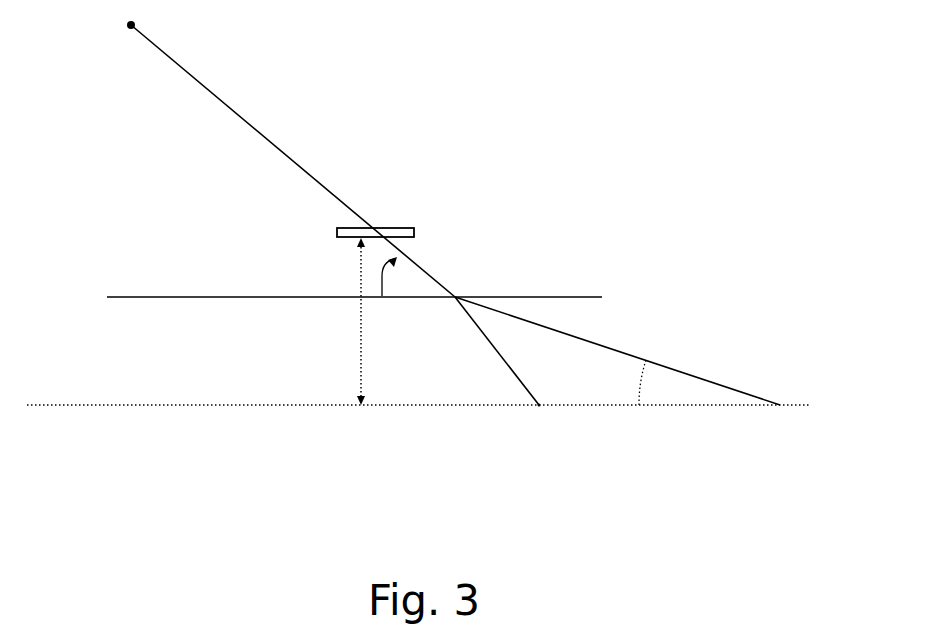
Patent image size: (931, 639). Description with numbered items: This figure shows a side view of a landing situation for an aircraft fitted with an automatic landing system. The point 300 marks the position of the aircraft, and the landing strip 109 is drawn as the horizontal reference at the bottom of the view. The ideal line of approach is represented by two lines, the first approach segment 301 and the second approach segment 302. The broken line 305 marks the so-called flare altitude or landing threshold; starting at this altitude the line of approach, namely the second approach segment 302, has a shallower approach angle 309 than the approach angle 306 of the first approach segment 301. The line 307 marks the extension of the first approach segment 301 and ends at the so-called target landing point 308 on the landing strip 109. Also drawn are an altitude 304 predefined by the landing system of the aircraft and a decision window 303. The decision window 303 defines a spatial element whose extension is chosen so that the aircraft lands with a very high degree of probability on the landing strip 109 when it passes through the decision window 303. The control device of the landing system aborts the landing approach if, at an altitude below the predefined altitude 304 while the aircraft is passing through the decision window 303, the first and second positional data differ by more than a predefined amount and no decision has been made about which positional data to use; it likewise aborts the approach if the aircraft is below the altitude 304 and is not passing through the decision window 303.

The point 300 is at (131, 25).
The first approach segment 301 is at (240, 116).
The second approach segment 302 is at (683, 372).
The decision window 303 is at (416, 232).
The predefined altitude 304 is at (362, 373).
The broken line 305 is at (567, 297).
The approach angle 306 is at (380, 296).
The line 307 is at (493, 345).
The target landing point 308 is at (539, 405).
The approach angle 309 is at (637, 398).
The landing strip 109 is at (793, 405).